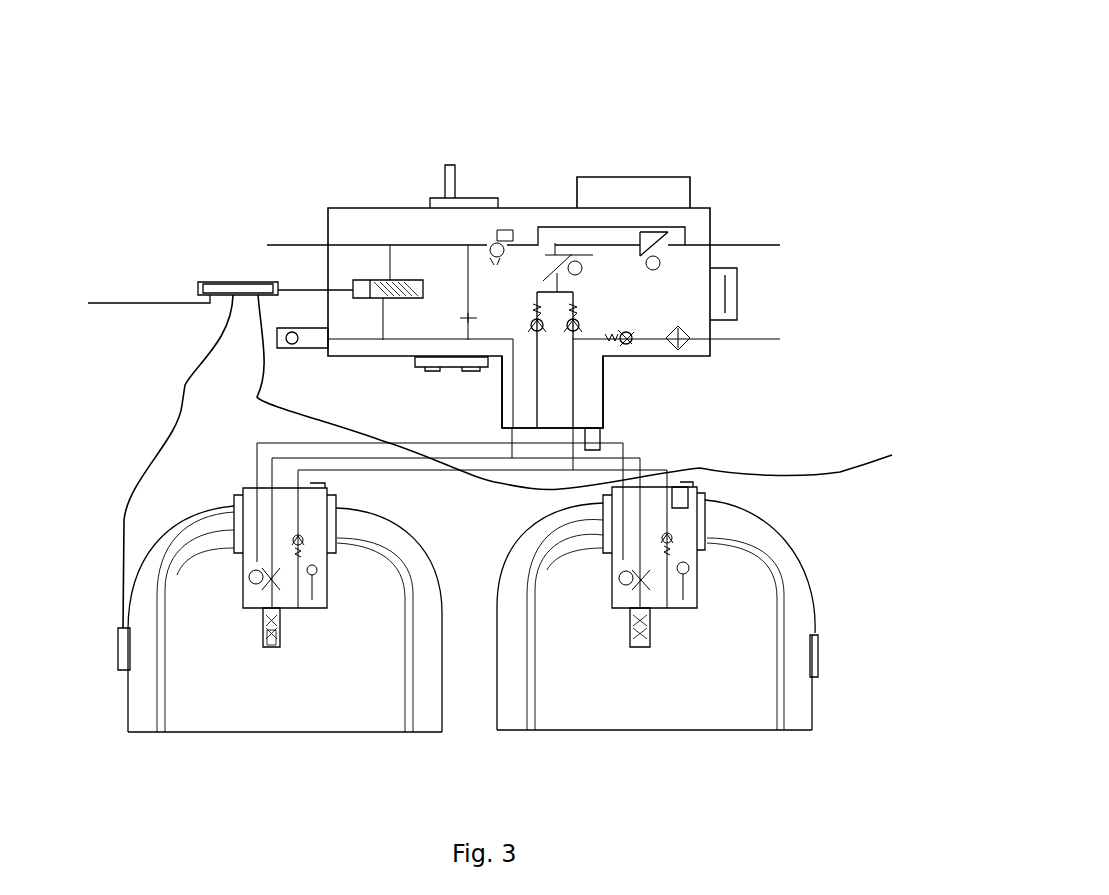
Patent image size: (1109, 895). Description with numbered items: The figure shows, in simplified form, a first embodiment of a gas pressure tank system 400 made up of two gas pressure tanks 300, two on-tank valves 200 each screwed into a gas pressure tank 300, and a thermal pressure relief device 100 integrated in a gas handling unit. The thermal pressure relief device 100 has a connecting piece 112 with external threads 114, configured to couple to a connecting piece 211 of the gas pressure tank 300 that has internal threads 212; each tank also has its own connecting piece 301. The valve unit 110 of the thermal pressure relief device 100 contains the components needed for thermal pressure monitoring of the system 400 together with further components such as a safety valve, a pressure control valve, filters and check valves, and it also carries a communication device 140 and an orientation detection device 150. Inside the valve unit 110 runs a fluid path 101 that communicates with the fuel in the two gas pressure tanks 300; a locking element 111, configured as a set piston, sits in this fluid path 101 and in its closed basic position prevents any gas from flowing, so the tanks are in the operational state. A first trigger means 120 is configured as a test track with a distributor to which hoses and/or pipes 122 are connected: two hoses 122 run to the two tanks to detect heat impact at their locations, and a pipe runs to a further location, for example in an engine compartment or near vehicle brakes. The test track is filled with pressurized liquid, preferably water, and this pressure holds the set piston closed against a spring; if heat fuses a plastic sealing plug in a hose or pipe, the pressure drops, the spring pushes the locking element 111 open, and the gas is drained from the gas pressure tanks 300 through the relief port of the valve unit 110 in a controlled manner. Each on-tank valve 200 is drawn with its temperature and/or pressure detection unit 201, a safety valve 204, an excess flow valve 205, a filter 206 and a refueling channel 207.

The gas pressure tank system 400 is at (760, 31).
The thermal pressure relief device 100 is at (275, 113).
The valve unit 110 is at (310, 195).
The locking element 111 is at (358, 279).
The connecting piece 112 is at (592, 407).
The external threads 114 is at (602, 442).
The first trigger means 120 is at (240, 287).
The hoses and/or pipes 122 is at (113, 303).
The fluid path 101 is at (343, 327).
The communication device 140 is at (438, 183).
The orientation detection device 150 is at (656, 164).
The on-tank valve 200 is at (215, 485).
The temperature and/or pressure detection unit 201 is at (689, 566).
The safety valve 204 is at (263, 582).
The excess flow valve 205 is at (263, 620).
The filter 206 is at (267, 636).
The refueling channel 207 is at (233, 502).
The connecting piece 211 is at (686, 522).
The internal threads 212 is at (689, 483).
The gas pressure tank 300 is at (806, 566).
The connecting piece 301 is at (233, 528).